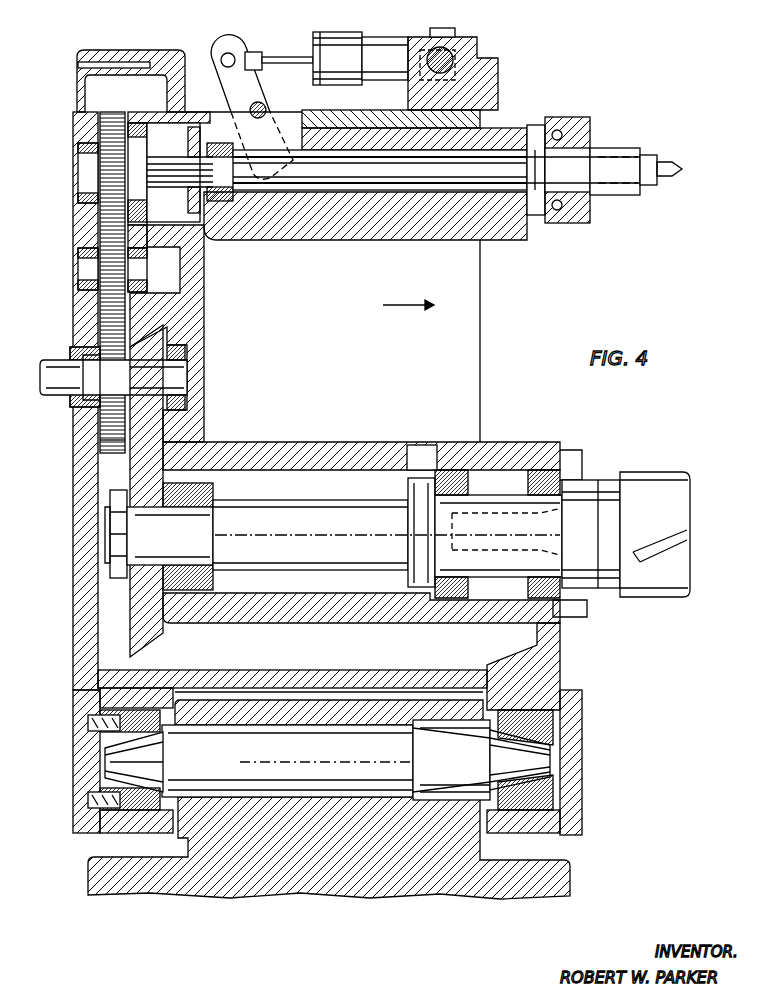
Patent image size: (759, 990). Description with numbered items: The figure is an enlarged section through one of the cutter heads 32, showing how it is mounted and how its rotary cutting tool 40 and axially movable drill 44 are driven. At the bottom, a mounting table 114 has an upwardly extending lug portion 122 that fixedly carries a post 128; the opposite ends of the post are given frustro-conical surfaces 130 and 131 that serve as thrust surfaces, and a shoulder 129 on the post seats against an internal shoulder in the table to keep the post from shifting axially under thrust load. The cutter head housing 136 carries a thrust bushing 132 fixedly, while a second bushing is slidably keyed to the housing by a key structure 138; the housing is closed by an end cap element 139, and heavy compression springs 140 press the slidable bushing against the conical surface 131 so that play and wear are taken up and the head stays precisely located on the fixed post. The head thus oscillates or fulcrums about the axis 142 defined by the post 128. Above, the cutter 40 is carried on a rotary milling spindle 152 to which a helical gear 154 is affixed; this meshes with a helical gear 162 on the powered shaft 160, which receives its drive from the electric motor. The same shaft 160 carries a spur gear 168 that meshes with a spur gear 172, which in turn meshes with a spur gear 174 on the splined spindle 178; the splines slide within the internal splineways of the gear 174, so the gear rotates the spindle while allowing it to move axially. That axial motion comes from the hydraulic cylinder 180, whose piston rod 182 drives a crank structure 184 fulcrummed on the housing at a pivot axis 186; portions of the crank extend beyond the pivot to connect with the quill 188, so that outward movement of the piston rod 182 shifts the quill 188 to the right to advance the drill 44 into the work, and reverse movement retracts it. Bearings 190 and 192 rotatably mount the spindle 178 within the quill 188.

The cutter head 32 is at (270, 920).
The rotary cutting tool 40 is at (657, 470).
The drill 44 is at (647, 183).
The mounting table 114 is at (418, 893).
The lug portion 122 is at (330, 707).
The post 128 is at (307, 797).
The shoulder 129 is at (412, 803).
The frustro-conical surface 130 is at (517, 777).
The frustro-conical surface 131 is at (107, 775).
The thrust bushing 132 is at (553, 728).
The housing 136 is at (553, 673).
The key structure 138 is at (141, 705).
The end cap element 139 is at (75, 743).
The compression springs 140 is at (107, 717).
The axis 142 is at (297, 760).
The rotary milling spindle 152 is at (313, 505).
The helical gear 154 is at (127, 473).
The shaft 160 is at (45, 390).
The helical gear 162 is at (160, 323).
The spur gear 168 is at (110, 453).
The spur gear 172 is at (103, 297).
The spur gear 174 is at (107, 113).
The splined spindle 178 is at (160, 183).
The hydraulic cylinder 180 is at (413, 33).
The piston rod 182 is at (293, 53).
The crank structure 184 is at (214, 78).
The pivot axis 186 is at (267, 108).
The quill 188 is at (388, 200).
The bearing 190 is at (222, 190).
The bearing 192 is at (553, 130).